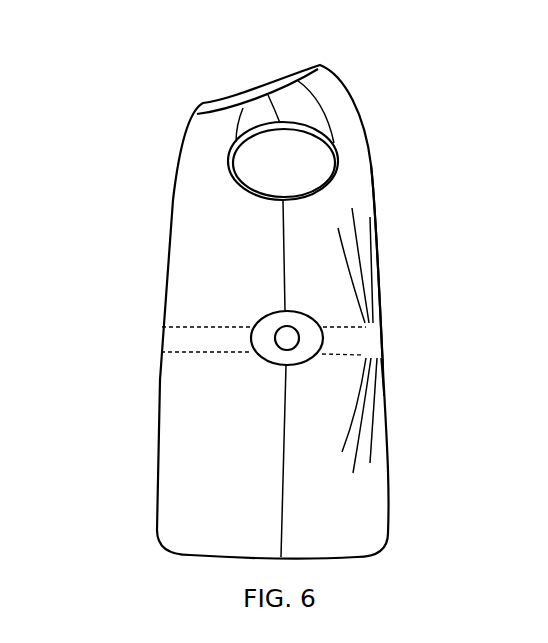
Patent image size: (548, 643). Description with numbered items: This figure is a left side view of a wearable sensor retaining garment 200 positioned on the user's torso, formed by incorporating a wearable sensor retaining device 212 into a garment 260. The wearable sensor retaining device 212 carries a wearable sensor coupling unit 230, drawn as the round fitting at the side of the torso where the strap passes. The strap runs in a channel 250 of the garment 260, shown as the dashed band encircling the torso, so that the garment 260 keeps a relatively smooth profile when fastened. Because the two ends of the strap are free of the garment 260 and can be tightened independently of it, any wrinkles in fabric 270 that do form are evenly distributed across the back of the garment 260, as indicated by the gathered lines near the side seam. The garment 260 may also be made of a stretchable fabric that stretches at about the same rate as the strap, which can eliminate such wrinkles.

The wearable sensor retaining garment 200 is at (115, 58).
The wearable sensor retaining device 212 is at (406, 338).
The wearable sensor coupling unit 230 is at (273, 337).
The channel 250 is at (195, 340).
The garment 260 is at (352, 515).
The wrinkles in fabric 270 is at (358, 308).